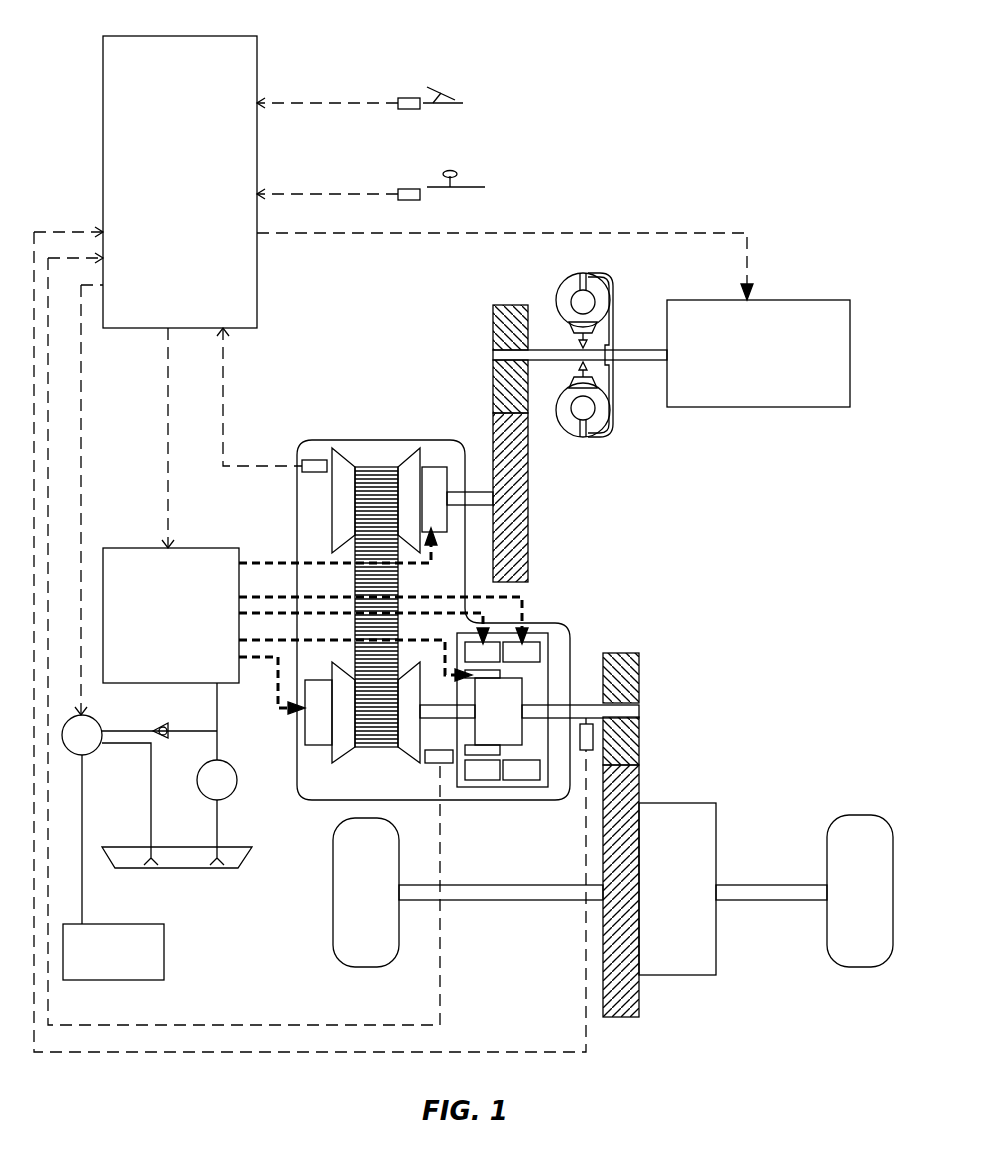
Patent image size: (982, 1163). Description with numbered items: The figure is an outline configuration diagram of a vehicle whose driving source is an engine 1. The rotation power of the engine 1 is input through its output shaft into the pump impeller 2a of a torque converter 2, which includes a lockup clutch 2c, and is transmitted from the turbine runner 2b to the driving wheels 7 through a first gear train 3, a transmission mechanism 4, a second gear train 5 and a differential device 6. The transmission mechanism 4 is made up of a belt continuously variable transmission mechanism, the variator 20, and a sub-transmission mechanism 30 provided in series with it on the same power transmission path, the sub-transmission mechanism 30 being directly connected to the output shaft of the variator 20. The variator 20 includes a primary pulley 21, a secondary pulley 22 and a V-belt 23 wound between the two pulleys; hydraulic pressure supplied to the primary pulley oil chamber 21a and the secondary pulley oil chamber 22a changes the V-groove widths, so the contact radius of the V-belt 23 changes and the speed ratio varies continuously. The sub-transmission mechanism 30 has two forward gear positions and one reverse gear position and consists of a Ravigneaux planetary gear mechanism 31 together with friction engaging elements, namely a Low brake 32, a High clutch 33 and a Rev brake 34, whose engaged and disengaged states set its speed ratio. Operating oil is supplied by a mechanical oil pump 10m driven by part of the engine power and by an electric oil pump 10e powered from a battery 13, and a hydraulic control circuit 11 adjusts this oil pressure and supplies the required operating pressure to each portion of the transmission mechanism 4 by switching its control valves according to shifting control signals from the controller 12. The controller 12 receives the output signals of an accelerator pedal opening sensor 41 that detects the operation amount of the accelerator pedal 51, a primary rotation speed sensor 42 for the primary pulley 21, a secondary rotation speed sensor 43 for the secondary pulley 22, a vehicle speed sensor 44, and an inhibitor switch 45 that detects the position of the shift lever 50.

The engine 1 is at (825, 315).
The torque converter 2 is at (603, 339).
The pump impeller 2a is at (563, 300).
The turbine runner 2b is at (598, 443).
The lockup clutch 2c is at (613, 377).
The first gear train 3 is at (500, 295).
The transmission mechanism 4 is at (458, 440).
The second gear train 5 is at (623, 1027).
The differential device 6 is at (675, 962).
The driving wheels 7 is at (367, 953).
The electric oil pump 10e is at (86, 755).
The mechanical oil pump 10m is at (212, 794).
The hydraulic control circuit 11 is at (122, 553).
The controller 12 is at (233, 47).
The battery 13 is at (152, 965).
The variator 20 is at (378, 613).
The primary pulley 21 is at (330, 495).
The primary pulley oil chamber 21a is at (432, 473).
The secondary pulley 22 is at (370, 758).
The secondary pulley oil chamber 22a is at (313, 735).
The V-belt 23 is at (390, 465).
The sub-transmission mechanism 30 is at (552, 686).
The Ravigneaux planetary gear mechanism 31 is at (502, 705).
The Low brake 32 is at (485, 655).
The High clutch 33 is at (483, 752).
The Rev brake 34 is at (520, 655).
The accelerator pedal opening sensor 41 is at (406, 109).
The primary rotation speed sensor 42 is at (315, 458).
The secondary rotation speed sensor 43 is at (434, 765).
The vehicle speed sensor 44 is at (586, 722).
The inhibitor switch 45 is at (411, 188).
The shift lever 50 is at (456, 172).
The accelerator pedal 51 is at (459, 86).